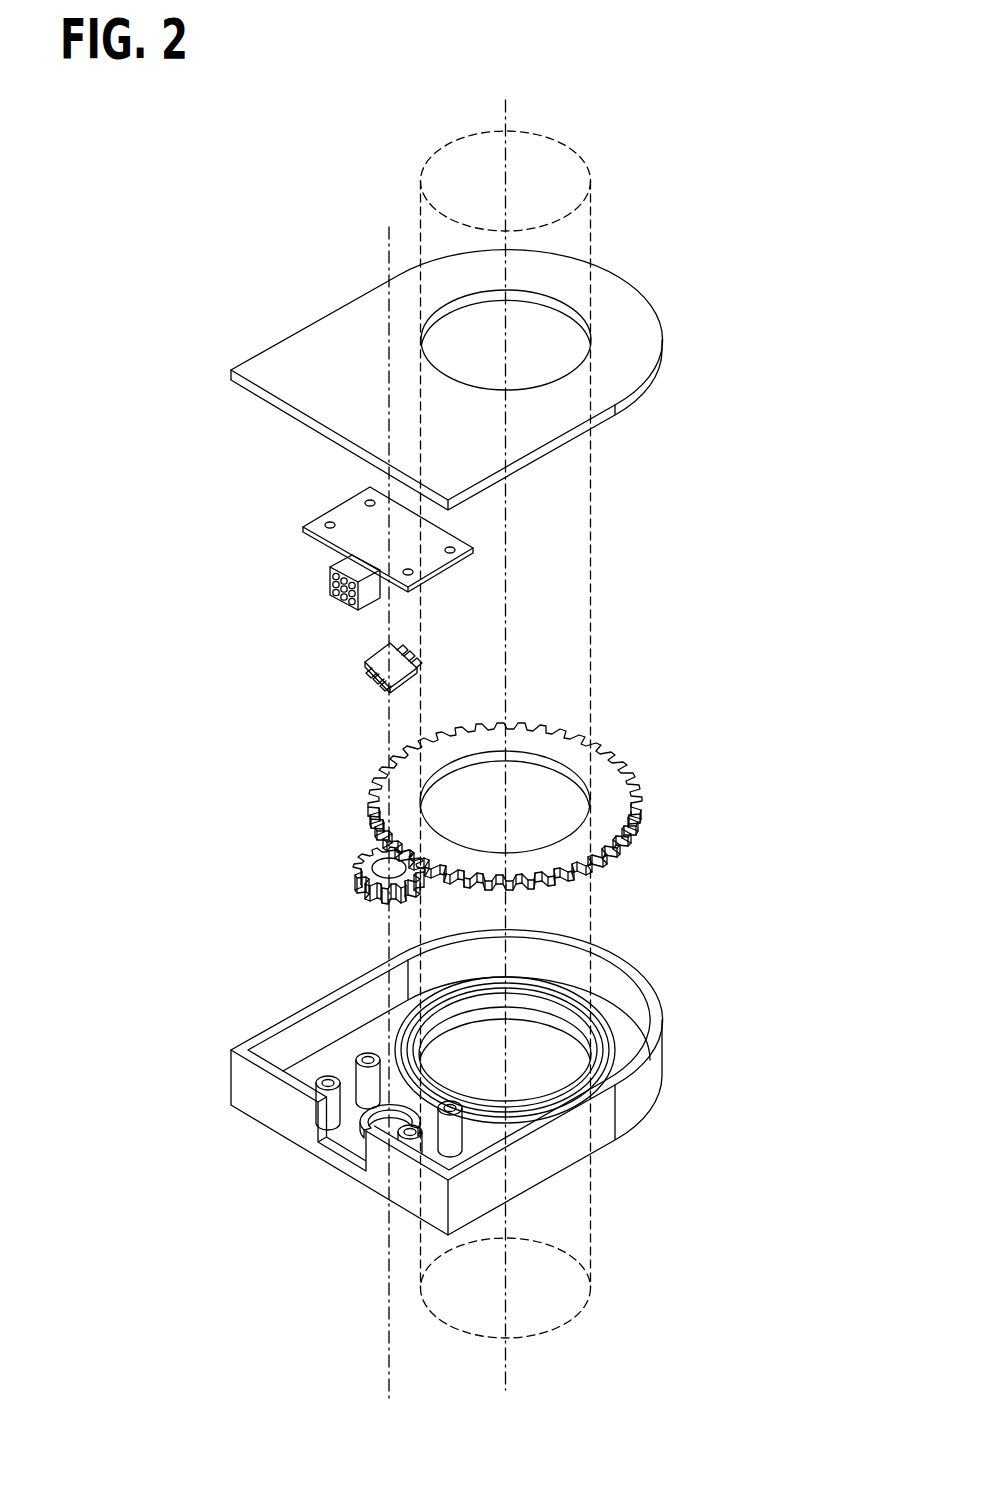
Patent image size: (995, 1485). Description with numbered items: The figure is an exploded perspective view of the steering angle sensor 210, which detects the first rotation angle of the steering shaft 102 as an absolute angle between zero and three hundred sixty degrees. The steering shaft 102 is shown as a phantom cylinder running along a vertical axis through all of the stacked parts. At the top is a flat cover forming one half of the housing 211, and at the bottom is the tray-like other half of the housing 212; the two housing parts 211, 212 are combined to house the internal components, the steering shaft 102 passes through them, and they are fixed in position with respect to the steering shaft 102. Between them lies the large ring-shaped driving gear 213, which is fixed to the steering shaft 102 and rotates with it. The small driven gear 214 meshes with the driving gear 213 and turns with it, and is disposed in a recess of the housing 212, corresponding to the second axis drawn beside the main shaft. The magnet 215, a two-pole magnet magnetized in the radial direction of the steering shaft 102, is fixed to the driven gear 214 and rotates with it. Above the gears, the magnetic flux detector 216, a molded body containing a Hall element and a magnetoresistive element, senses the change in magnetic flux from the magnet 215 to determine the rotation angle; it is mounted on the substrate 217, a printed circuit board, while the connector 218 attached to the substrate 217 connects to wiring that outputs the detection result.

The steering shaft 102 is at (596, 199).
The steering angle sensor 210 is at (278, 336).
The housing 211 is at (665, 337).
The housing 212 is at (662, 1049).
The driving gear 213 is at (641, 812).
The driven gear 214 is at (337, 850).
The magnet 215 is at (384, 867).
The magnetic flux detector 216 is at (372, 646).
The substrate 217 is at (330, 511).
The connector 218 is at (352, 603).